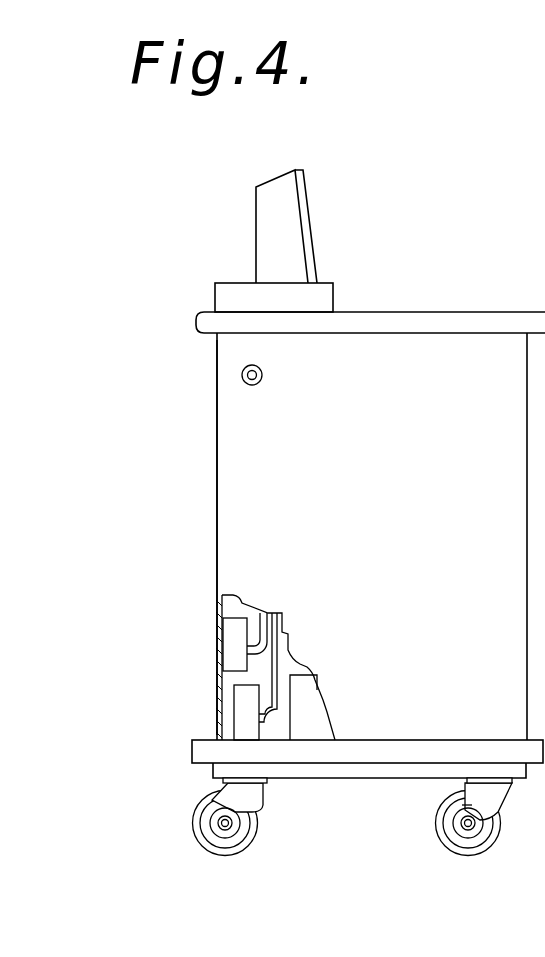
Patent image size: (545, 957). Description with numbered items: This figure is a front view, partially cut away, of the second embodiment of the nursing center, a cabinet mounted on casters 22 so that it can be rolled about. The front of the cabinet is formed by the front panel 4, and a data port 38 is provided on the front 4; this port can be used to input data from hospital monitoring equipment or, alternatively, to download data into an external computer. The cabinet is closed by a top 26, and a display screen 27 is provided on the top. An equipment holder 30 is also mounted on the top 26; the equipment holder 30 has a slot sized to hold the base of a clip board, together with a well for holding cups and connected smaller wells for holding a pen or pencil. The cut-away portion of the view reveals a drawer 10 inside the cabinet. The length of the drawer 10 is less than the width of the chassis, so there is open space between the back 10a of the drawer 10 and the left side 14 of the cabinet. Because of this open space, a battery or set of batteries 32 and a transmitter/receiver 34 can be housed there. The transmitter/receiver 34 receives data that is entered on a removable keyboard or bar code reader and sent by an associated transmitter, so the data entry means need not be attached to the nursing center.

The front panel 4 is at (390, 505).
The drawer 10 is at (310, 720).
The back of the drawer 10a is at (292, 700).
The left side 14 is at (217, 515).
The casters 22 is at (252, 810).
The top 26 is at (415, 312).
The display screen 27 is at (312, 230).
The equipment holder 30 is at (238, 293).
The battery or set of batteries 32 is at (242, 708).
The transmitter/receiver 34 is at (228, 639).
The data port 38 is at (243, 382).